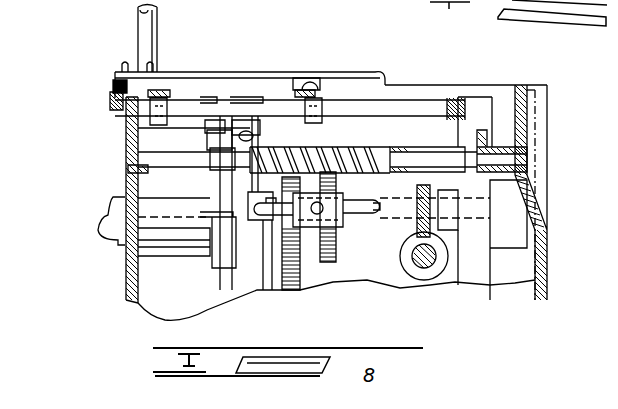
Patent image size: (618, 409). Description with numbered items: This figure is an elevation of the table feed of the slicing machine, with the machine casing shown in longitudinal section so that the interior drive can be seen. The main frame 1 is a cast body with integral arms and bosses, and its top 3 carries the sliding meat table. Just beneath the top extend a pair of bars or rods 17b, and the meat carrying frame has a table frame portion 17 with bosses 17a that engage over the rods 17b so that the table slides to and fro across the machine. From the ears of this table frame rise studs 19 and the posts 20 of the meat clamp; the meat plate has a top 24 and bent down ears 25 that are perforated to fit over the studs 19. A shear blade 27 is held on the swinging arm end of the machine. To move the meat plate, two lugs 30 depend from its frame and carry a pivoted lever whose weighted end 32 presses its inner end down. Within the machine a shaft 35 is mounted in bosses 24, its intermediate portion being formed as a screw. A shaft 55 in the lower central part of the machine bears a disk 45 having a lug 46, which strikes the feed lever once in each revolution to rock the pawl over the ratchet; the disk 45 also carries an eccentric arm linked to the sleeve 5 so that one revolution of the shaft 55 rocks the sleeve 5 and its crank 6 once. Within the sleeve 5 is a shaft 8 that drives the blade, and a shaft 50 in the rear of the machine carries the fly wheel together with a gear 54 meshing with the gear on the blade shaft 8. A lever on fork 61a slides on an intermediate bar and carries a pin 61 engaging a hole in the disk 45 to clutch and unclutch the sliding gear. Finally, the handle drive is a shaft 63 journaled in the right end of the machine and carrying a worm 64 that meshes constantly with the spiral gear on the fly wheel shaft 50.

The main frame 1 is at (547, 253).
The top of the frame 3 is at (525, 85).
The sleeve 5 is at (124, 268).
The crank 6 is at (206, 177).
The shaft 8 is at (113, 245).
The table frame portion 17 is at (272, 99).
The bosses 17a is at (323, 100).
The bars or rods 17b is at (400, 107).
The studs 19 is at (112, 90).
The posts 20 is at (163, 37).
The bosses 24 is at (215, 68).
The bent down ears 25 is at (315, 97).
The shear blade 27 is at (118, 108).
The lugs 30 is at (212, 97).
The weighted end 32 is at (243, 133).
The shaft 35 is at (422, 137).
The disk 45 is at (234, 262).
The lug 46 is at (241, 288).
The shaft 50 is at (383, 210).
The gear 54 is at (305, 268).
The shaft 55 is at (353, 219).
The pin 61 is at (265, 222).
The lever on fork 61a is at (337, 240).
The shaft 63 is at (424, 266).
The worm 64 is at (448, 276).